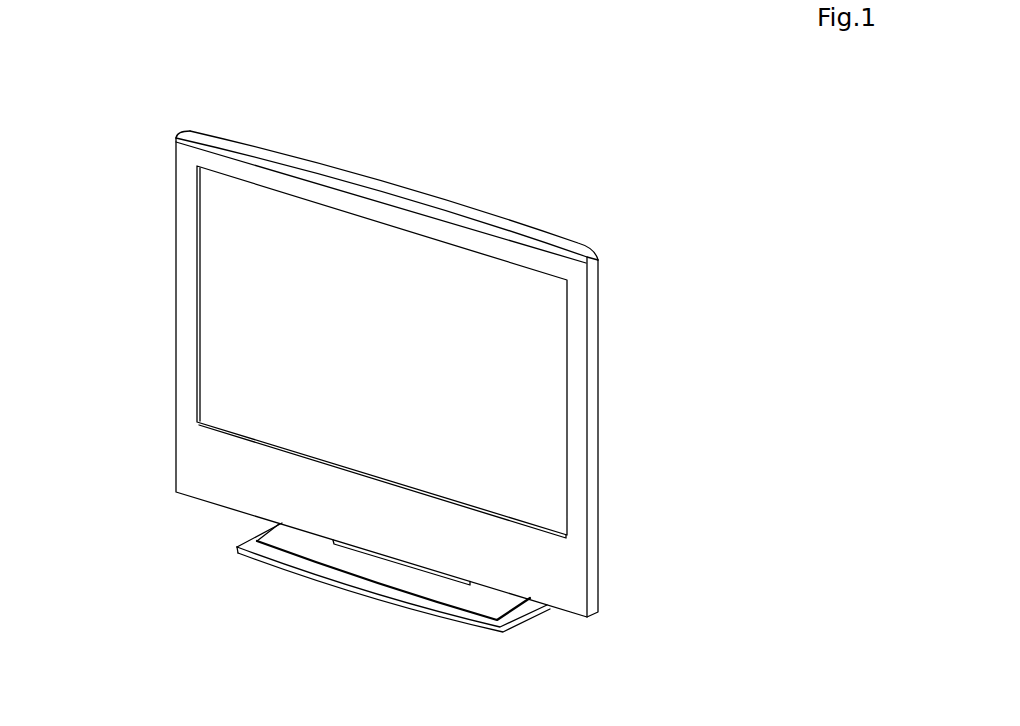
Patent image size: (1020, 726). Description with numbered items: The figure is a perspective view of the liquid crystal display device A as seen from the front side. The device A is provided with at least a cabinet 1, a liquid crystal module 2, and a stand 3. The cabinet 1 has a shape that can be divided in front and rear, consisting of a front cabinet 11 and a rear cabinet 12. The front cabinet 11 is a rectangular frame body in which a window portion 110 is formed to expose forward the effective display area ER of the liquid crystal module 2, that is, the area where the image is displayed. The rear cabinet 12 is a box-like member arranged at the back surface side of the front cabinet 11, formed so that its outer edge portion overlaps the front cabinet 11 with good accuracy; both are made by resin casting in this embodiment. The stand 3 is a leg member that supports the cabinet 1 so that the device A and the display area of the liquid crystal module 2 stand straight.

The cabinet 1 is at (178, 165).
The front cabinet 11 is at (189, 132).
The rear cabinet 12 is at (258, 145).
The window portion 110 is at (197, 229).
The liquid crystal module 2 is at (235, 293).
The effective display area ER is at (235, 386).
The stand 3 is at (273, 555).
The liquid crystal display device A is at (617, 200).